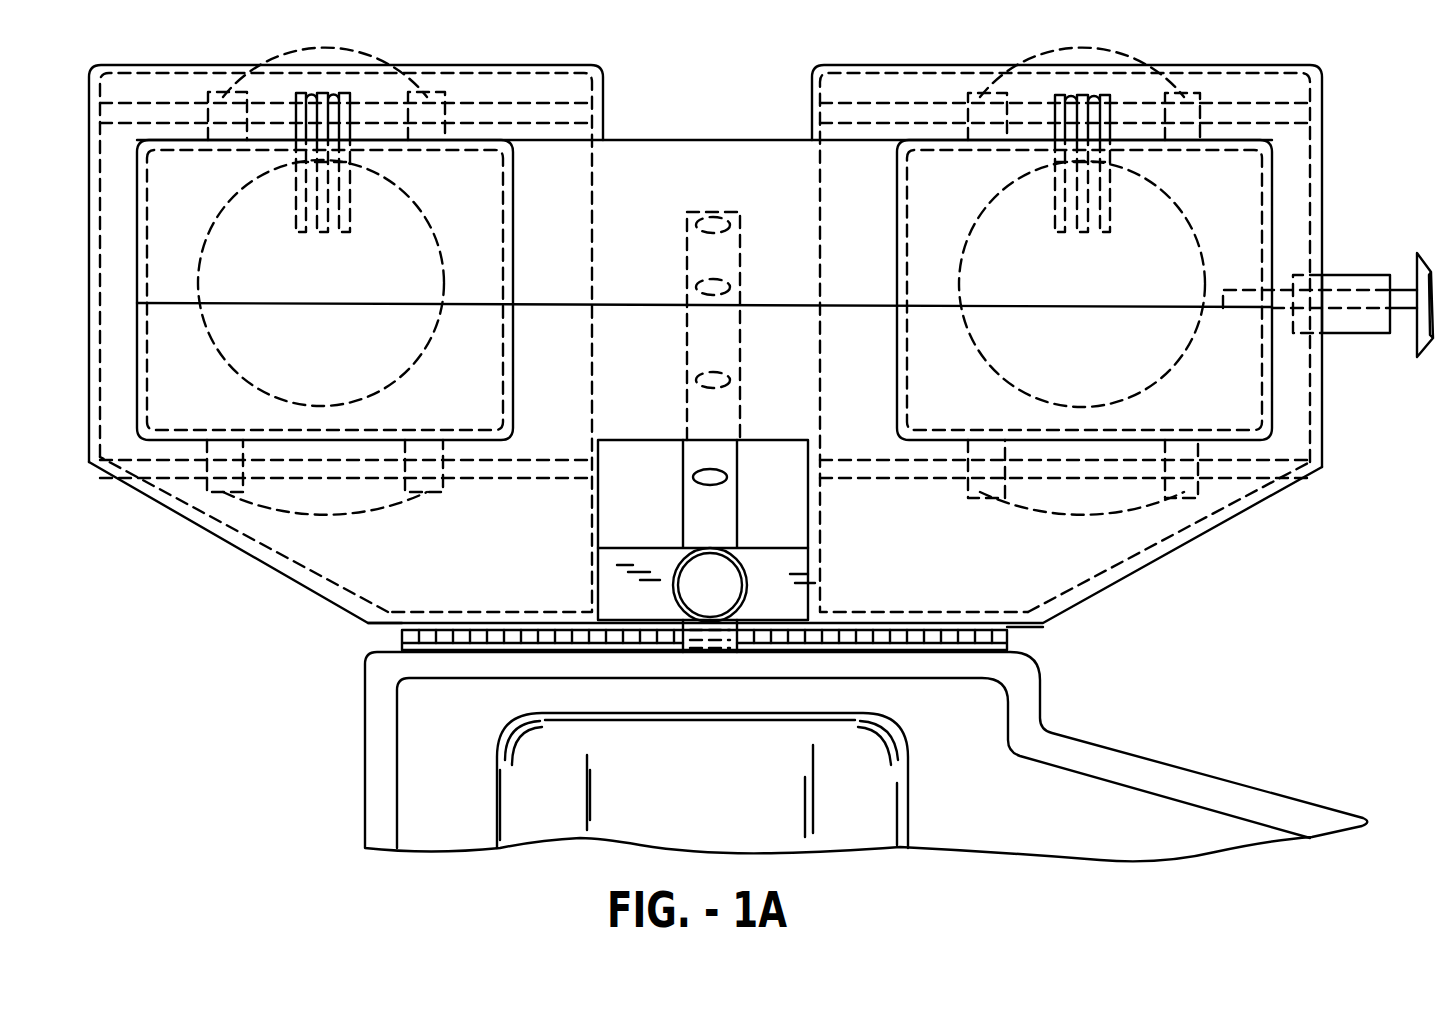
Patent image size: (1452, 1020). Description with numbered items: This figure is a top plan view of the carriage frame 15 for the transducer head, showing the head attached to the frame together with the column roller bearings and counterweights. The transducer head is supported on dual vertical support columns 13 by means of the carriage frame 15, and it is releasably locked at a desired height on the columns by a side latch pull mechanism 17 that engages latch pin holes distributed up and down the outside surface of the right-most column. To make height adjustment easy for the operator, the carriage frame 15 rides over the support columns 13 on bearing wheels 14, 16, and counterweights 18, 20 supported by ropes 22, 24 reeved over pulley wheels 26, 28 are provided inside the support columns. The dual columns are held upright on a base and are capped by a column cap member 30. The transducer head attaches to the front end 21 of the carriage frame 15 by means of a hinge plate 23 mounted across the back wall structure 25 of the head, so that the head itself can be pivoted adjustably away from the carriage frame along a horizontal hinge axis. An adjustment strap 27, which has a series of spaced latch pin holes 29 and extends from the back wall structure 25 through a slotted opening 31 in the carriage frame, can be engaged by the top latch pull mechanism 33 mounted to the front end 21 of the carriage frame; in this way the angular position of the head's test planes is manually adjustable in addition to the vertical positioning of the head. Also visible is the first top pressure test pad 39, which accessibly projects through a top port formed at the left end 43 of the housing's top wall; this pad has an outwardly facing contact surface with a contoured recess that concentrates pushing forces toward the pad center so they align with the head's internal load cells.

The vertical support columns 13 is at (810, 97).
The bearing wheel 14 is at (325, 282).
The carriage frame 15 is at (1233, 550).
The bearing wheel 16 is at (1082, 284).
The side latch pull mechanism 17 is at (1433, 322).
The counterweight 18 is at (421, 210).
The counterweight 20 is at (1174, 208).
The front end 21 is at (393, 627).
The rope 22 is at (323, 232).
The hinge plate 23 is at (397, 636).
The rope 24 is at (1082, 234).
The back wall structure 25 is at (1070, 722).
The pulley wheel 26 is at (353, 118).
The adjustment strap 27 is at (735, 245).
The pulley wheel 28 is at (1033, 127).
The latch pin holes 29 is at (713, 480).
The column cap member 30 is at (162, 170).
The slotted opening 31 is at (643, 515).
The top latch pull mechanism 33 is at (720, 588).
The first top pressure test pad 39 is at (868, 793).
The left end 43 is at (345, 770).